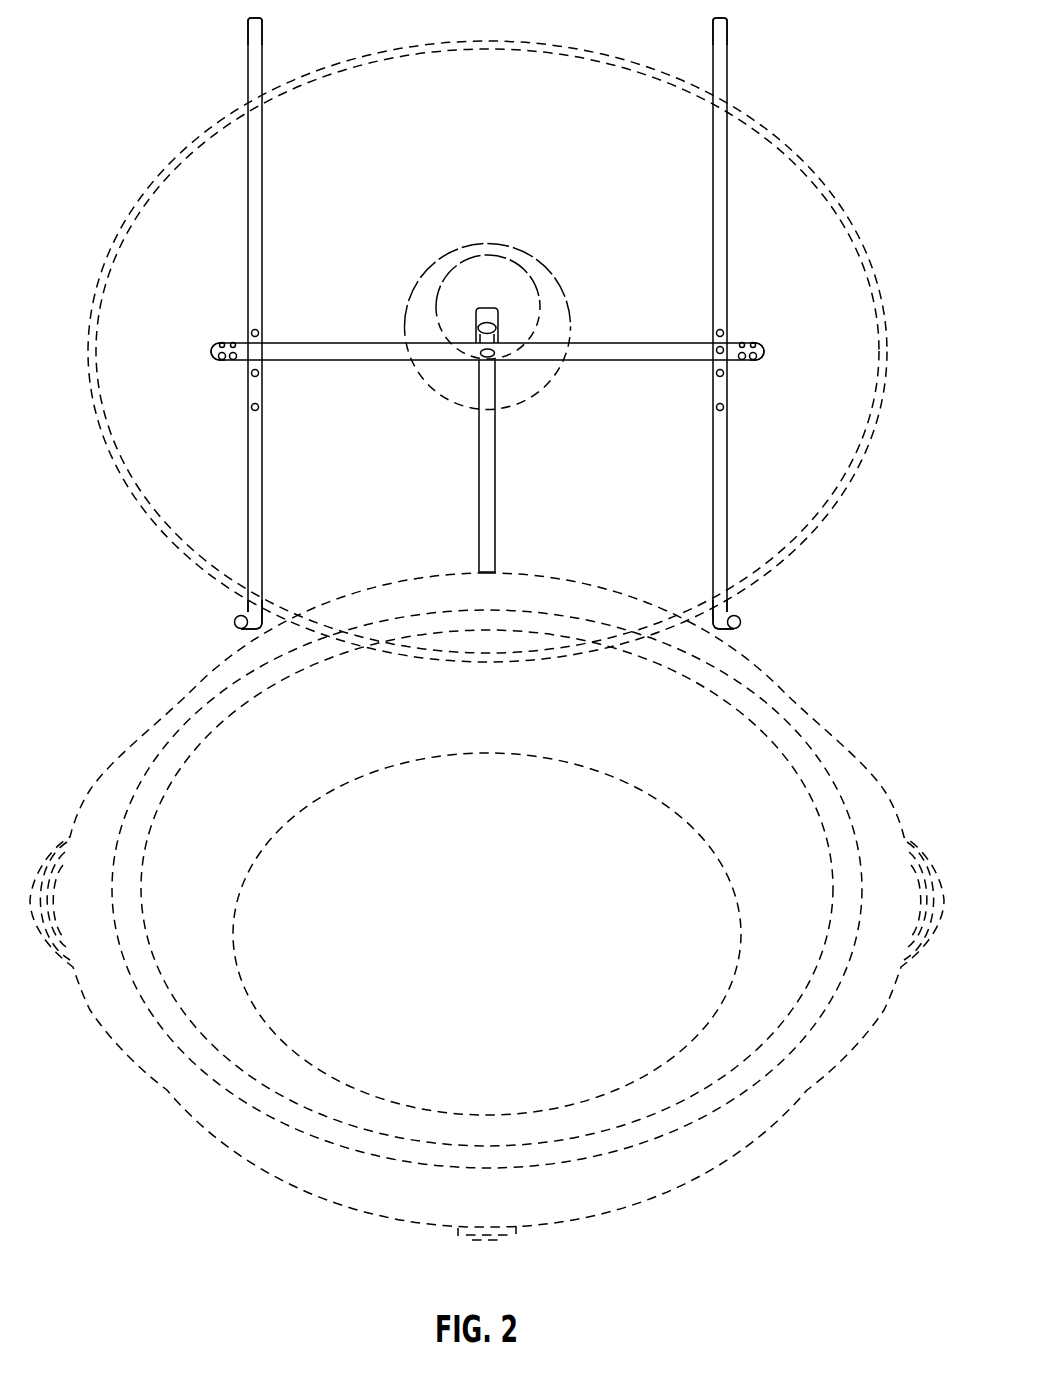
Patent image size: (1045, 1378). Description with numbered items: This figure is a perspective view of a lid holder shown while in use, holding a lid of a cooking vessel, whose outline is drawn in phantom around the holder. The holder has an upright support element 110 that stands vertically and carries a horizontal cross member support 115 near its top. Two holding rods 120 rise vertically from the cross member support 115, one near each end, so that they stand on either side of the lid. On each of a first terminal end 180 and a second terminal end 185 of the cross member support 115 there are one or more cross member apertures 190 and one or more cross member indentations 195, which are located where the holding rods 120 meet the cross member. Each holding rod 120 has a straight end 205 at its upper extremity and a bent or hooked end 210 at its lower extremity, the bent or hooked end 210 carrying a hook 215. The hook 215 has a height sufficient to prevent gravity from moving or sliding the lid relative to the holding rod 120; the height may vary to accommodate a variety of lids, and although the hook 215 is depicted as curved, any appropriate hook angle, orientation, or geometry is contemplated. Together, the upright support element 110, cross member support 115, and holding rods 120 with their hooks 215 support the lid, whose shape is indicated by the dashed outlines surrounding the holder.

The upright support element 110 is at (490, 505).
The cross member support 115 is at (608, 350).
The holding rods 120 is at (253, 208).
The first terminal end 180 is at (211, 351).
The second terminal end 185 is at (764, 351).
The cross member apertures 190 is at (222, 343).
The cross member indentations 195 is at (222, 360).
The straight end 205 is at (253, 43).
The bent or hooked end 210 is at (247, 608).
The hook 215 is at (234, 622).